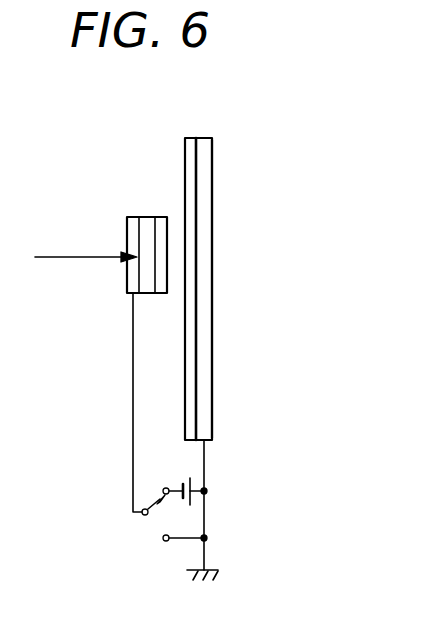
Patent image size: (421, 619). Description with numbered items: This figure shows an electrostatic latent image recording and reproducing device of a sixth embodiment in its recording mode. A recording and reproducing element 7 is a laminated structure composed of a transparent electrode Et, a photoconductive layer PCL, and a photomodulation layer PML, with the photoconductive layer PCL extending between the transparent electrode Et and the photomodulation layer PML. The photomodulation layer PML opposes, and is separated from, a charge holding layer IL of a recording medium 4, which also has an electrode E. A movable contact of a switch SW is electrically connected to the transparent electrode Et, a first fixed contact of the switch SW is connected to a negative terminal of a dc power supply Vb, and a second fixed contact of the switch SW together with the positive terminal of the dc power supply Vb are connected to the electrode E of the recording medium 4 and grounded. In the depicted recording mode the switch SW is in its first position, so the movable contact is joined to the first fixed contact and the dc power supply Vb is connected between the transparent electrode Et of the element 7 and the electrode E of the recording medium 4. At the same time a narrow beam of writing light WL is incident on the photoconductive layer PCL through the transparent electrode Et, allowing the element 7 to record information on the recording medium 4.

The recording medium 4 is at (204, 409).
The charge holding layer IL is at (191, 138).
The electrode E is at (206, 138).
The recording and reproducing element 7 is at (127, 278).
The transparent electrode Et is at (134, 217).
The photoconductive layer PCL is at (143, 217).
The photomodulation layer PML is at (158, 217).
The writing light WL is at (82, 246).
The dc power supply Vb is at (188, 477).
The switch SW is at (160, 506).